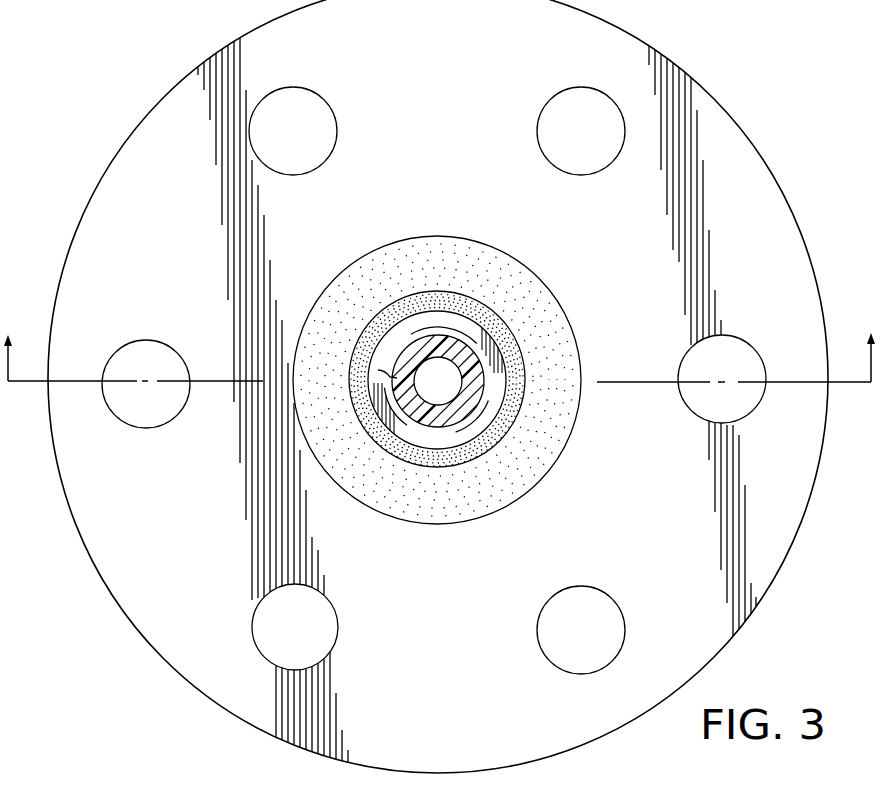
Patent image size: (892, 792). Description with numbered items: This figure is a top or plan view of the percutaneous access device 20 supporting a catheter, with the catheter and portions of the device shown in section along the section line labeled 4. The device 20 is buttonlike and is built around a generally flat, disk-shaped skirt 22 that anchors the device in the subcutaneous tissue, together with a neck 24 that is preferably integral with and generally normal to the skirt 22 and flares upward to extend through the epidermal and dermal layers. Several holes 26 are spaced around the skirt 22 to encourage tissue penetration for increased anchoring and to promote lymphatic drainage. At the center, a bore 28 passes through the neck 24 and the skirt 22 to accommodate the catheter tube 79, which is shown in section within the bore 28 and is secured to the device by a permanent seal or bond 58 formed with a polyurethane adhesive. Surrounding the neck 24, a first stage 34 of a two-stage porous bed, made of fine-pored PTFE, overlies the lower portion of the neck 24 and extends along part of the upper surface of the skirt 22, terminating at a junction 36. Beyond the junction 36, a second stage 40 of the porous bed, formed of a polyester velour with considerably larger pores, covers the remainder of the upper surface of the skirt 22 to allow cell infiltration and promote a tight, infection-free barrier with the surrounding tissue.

The percutaneous access device 20 is at (231, 24).
The skirt 22 is at (733, 117).
The second stage of the porous bed 40 is at (167, 97).
The holes 26 is at (614, 98).
The junction 36 is at (531, 273).
The first stage of the porous bed 34 is at (552, 318).
The neck 24 is at (508, 368).
The central bore 28 is at (483, 382).
The catheter tube 79 is at (418, 357).
The seal or bond 58 is at (378, 370).
The section line 4- 4 is at (442, 348).